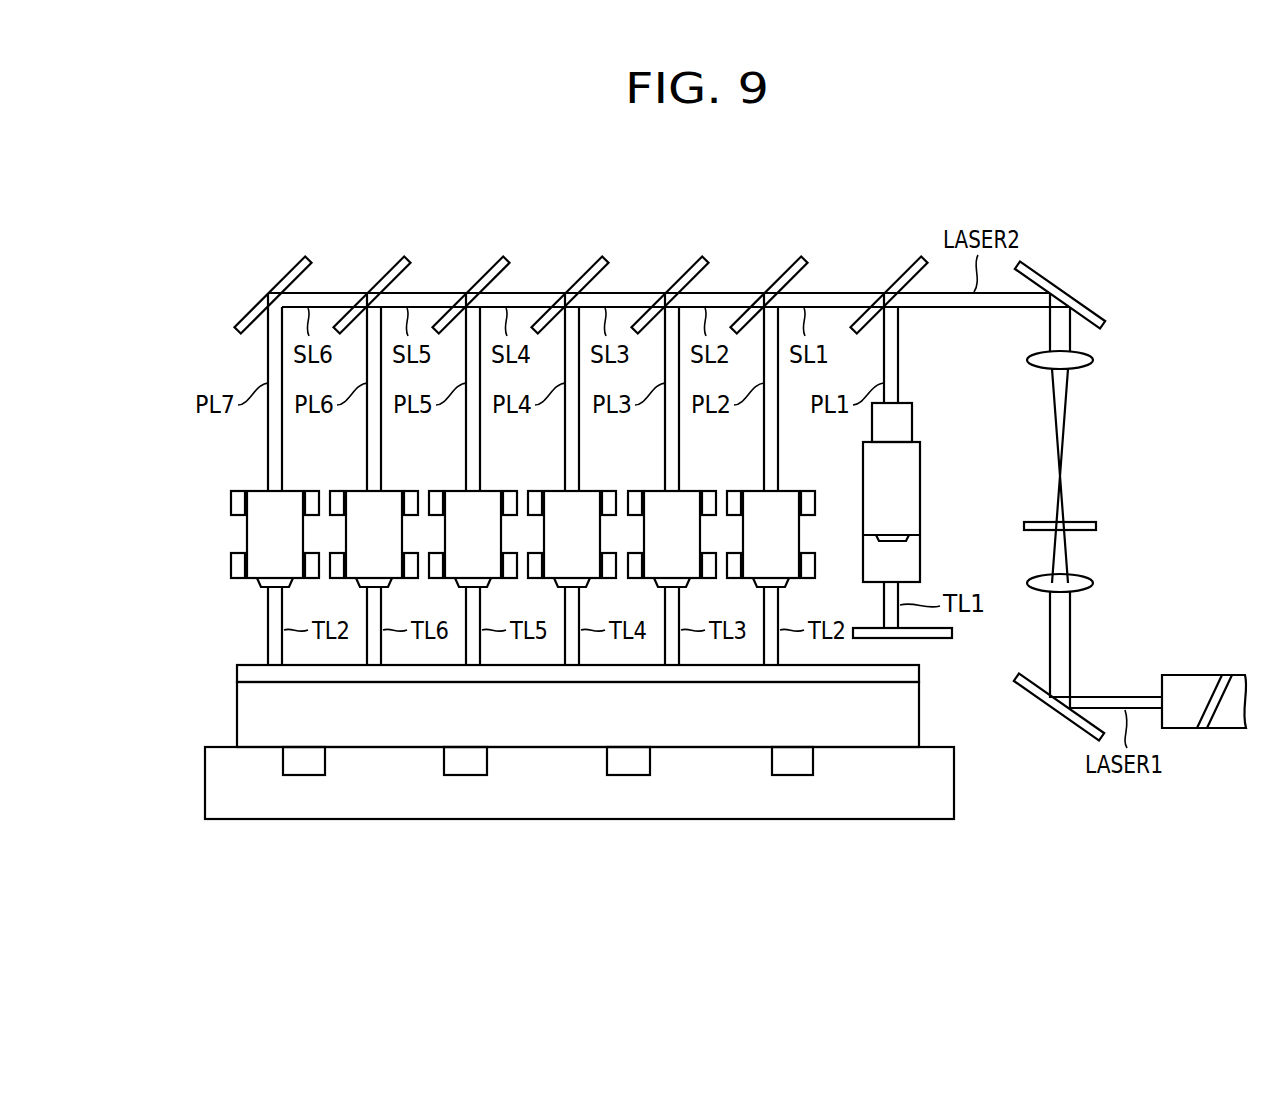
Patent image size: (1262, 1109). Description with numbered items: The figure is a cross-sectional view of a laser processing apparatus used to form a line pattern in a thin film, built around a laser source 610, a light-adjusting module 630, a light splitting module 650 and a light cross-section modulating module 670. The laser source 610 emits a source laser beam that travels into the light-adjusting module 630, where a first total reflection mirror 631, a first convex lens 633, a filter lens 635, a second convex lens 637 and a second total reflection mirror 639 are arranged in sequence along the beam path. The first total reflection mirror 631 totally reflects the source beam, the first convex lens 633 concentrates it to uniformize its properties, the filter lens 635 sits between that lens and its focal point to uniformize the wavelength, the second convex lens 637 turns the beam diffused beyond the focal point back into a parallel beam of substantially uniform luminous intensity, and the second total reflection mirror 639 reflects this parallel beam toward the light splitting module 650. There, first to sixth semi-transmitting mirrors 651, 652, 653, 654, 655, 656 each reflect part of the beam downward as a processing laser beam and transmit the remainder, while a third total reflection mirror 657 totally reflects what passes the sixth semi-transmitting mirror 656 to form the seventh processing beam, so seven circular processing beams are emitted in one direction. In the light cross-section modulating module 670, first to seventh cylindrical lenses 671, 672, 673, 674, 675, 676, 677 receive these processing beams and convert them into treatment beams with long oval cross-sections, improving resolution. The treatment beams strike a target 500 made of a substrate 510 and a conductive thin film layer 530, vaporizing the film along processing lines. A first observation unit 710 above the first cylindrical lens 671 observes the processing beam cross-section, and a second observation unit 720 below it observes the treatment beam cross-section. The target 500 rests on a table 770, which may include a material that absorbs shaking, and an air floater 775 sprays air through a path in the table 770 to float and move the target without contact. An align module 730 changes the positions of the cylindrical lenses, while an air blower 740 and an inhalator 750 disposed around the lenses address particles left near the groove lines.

The target 500 is at (230, 665).
The substrate 510 is at (912, 715).
The conductive thin film layer 530 is at (912, 676).
The laser source 610 is at (1202, 675).
The light-adjusting module 630 is at (1184, 283).
The first total reflection mirror 631 is at (1055, 712).
The first convex lens 633 is at (1094, 585).
The filter lens 635 is at (1097, 526).
The second convex lens 637 is at (1095, 360).
The second total reflection mirror 639 is at (1068, 287).
The light splitting module 650 is at (920, 194).
The first semi-transmitting mirror 651 is at (898, 268).
The second semi-transmitting mirror 652 is at (778, 268).
The third semi-transmitting mirror 653 is at (679, 268).
The fourth semi-transmitting mirror 654 is at (579, 268).
The fifth semi-transmitting mirror 655 is at (480, 268).
The sixth semi-transmitting mirror 656 is at (381, 268).
The third total reflection mirror 657 is at (282, 268).
The light cross-section modulating module 670 is at (233, 890).
The first cylindrical lens 671 is at (873, 583).
The second cylindrical lens 672 is at (744, 583).
The third cylindrical lens 673 is at (645, 583).
The fourth cylindrical lens 674 is at (545, 583).
The fifth cylindrical lens 675 is at (446, 583).
The sixth cylindrical lens 676 is at (347, 583).
The seventh cylindrical lens 677 is at (234, 693).
The first observation unit 710 is at (907, 422).
The second observation unit 720 is at (907, 553).
The align module 730 is at (305, 503).
The air blower 740 is at (232, 567).
The inhalator 750 is at (308, 558).
The table 770 is at (950, 785).
The air floater 775 is at (852, 845).